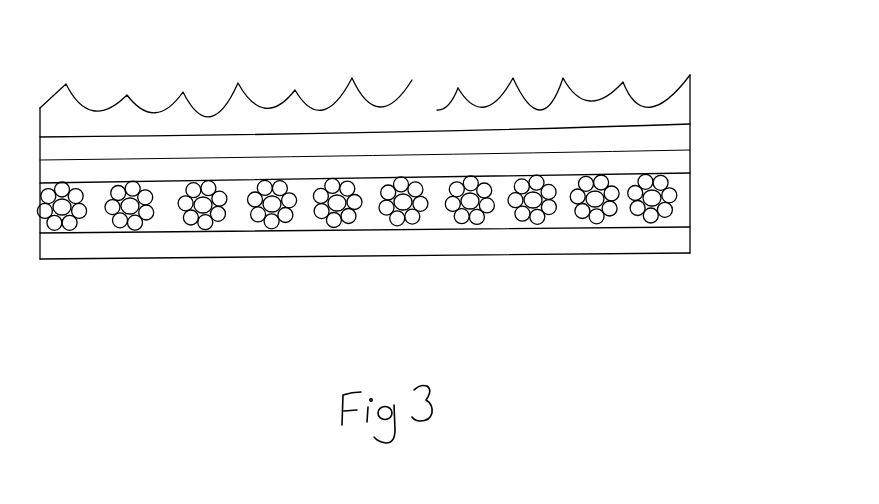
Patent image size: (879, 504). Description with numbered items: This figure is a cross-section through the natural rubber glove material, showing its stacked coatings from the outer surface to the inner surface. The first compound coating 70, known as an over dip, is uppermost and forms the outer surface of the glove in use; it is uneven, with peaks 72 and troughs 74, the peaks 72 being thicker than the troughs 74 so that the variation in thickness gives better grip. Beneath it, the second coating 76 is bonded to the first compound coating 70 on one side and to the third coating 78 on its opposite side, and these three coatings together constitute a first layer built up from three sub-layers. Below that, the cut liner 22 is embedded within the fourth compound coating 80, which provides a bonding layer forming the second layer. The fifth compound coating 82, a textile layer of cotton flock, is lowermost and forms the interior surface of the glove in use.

The first compound coating 70 is at (677, 112).
The peaks 72 is at (437, 110).
The troughs 74 is at (435, 110).
The second coating 76 is at (676, 140).
The third coating 78 is at (677, 166).
The cut liner 22 is at (680, 201).
The fourth compound coating 80 is at (627, 220).
The fifth compound coating 82 is at (580, 242).